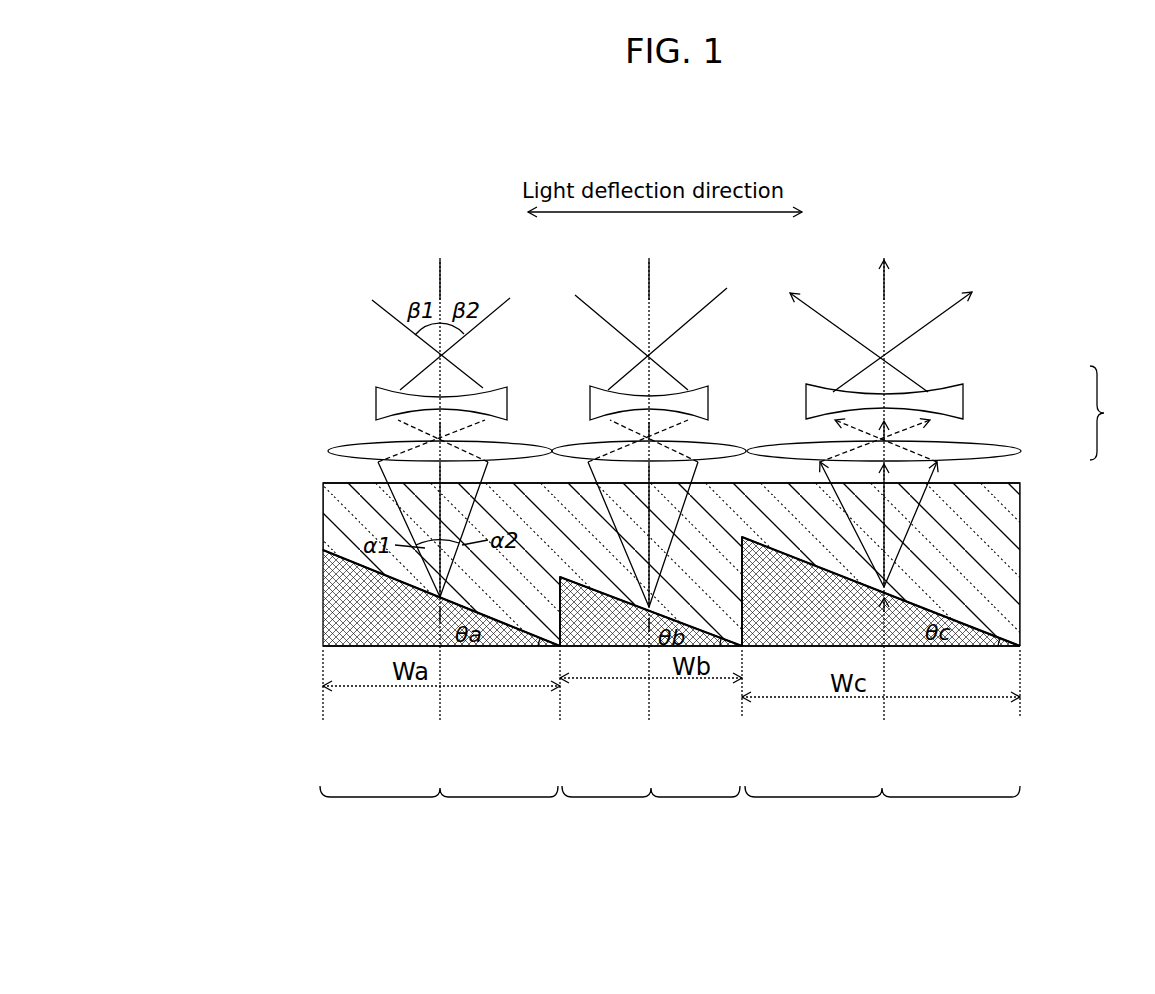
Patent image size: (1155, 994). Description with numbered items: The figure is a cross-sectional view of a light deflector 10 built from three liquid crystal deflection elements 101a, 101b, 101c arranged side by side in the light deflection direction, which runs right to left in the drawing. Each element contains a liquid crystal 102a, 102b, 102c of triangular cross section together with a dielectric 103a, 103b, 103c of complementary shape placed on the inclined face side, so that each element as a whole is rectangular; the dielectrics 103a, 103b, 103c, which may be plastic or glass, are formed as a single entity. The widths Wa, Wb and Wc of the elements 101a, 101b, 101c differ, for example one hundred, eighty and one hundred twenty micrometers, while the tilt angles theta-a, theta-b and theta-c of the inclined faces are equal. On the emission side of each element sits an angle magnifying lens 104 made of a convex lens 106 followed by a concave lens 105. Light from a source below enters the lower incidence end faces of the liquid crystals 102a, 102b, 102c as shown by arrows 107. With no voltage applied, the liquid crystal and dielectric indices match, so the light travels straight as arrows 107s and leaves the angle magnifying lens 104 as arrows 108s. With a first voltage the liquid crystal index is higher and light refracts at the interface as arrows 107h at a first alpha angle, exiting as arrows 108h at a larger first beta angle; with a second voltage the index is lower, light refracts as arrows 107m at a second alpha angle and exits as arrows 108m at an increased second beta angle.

The light deflector 10 is at (232, 352).
The liquid crystal deflection element 101a is at (439, 810).
The liquid crystal deflection element 101b is at (651, 810).
The liquid crystal deflection element 101c is at (882, 810).
The liquid crystal 102a is at (353, 620).
The liquid crystal 102b is at (607, 625).
The liquid crystal 102c is at (935, 610).
The dielectric 103a is at (340, 527).
The dielectric 103b is at (724, 492).
The dielectric 103c is at (997, 535).
The angle magnifying lens 104 is at (1122, 413).
The concave lens 105 is at (966, 389).
The convex lens 106 is at (1016, 451).
The arrows indicating incident light 107 is at (441, 704).
The arrows indicating refracted light 107h is at (360, 458).
The arrows indicating straight-traveling light 107s is at (492, 466).
The arrows indicating refracted light 107m is at (496, 462).
The arrows indicating emitted light 108h is at (382, 303).
The arrows indicating emitted light 108s is at (440, 280).
The arrows indicating emitted light 108m is at (487, 303).